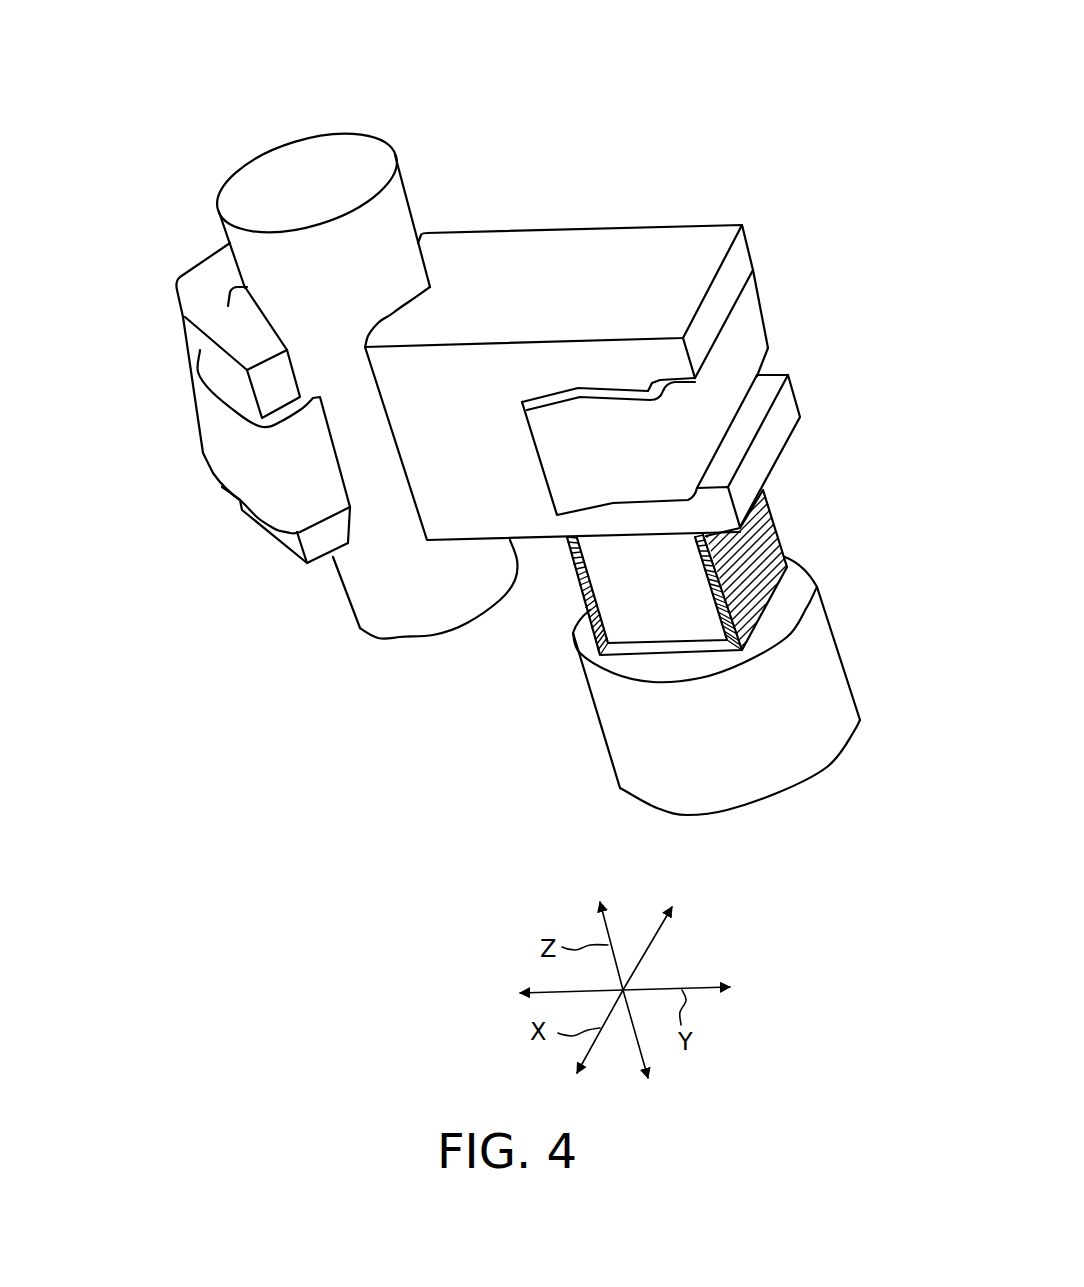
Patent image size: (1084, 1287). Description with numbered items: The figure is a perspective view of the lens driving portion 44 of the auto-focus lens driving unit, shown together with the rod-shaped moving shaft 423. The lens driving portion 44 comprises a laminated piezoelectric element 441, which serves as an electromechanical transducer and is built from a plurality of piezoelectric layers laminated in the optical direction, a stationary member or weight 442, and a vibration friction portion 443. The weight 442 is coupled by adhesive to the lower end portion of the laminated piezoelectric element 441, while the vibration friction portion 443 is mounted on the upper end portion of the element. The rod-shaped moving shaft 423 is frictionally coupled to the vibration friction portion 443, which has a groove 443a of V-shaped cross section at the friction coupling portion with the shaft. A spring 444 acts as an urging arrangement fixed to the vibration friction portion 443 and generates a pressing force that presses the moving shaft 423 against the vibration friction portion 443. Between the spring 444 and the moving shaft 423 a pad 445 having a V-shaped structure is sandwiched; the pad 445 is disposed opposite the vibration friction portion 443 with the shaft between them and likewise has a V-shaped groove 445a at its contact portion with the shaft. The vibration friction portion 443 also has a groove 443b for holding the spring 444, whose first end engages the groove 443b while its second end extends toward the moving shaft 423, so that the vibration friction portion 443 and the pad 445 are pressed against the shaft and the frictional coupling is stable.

The lens driving portion 44 is at (613, 105).
The rod-shaped moving shaft 423 is at (360, 597).
The laminated piezoelectric element 441 is at (760, 542).
The stationary member (weight) 442 is at (737, 685).
The vibration friction portion 443 is at (735, 270).
The groove 443a is at (413, 303).
The groove 443b is at (760, 397).
The spring 444 is at (745, 347).
The pad 445 is at (205, 347).
The groove 445a is at (230, 308).